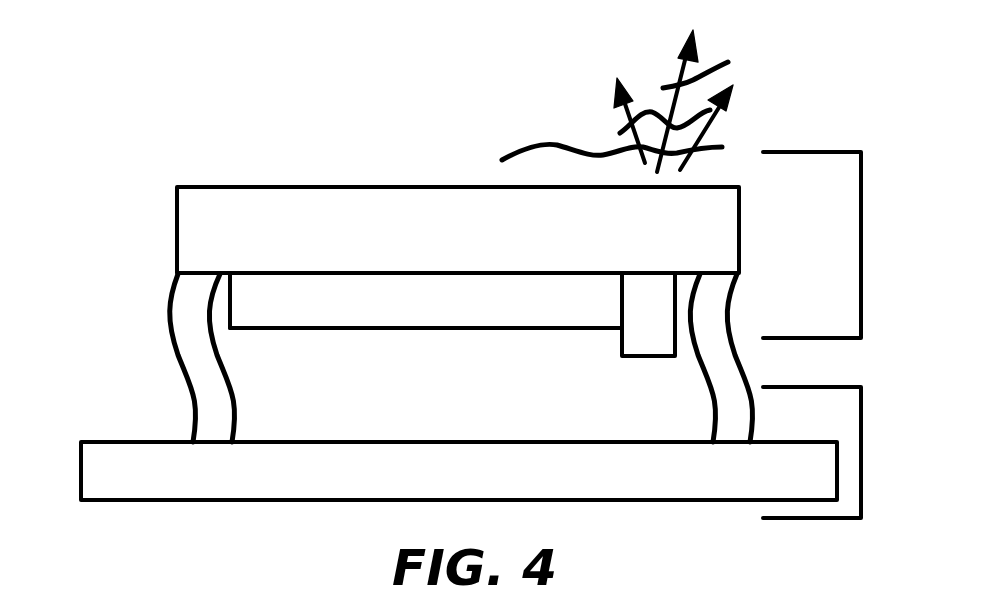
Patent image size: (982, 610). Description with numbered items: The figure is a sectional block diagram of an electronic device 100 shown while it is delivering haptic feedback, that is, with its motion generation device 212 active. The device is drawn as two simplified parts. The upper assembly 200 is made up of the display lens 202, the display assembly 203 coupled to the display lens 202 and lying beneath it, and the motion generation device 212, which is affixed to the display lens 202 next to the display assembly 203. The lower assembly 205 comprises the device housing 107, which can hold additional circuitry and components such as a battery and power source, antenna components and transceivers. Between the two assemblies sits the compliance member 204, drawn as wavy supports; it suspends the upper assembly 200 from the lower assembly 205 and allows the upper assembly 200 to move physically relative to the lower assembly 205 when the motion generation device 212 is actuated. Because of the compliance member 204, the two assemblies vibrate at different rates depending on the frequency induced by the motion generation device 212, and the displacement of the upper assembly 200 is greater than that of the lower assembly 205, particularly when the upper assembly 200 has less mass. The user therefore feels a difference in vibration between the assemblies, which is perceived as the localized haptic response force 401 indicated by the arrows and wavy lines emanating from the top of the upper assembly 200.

The electronic device 100 is at (128, 240).
The device housing 107 is at (656, 477).
The upper assembly 200 is at (860, 183).
The display lens 202 is at (393, 245).
The display assembly 203 is at (517, 308).
The compliance member 204 is at (168, 300).
The lower assembly 205 is at (858, 394).
The motion generation device 212 is at (651, 320).
The haptic response force 401 is at (693, 68).